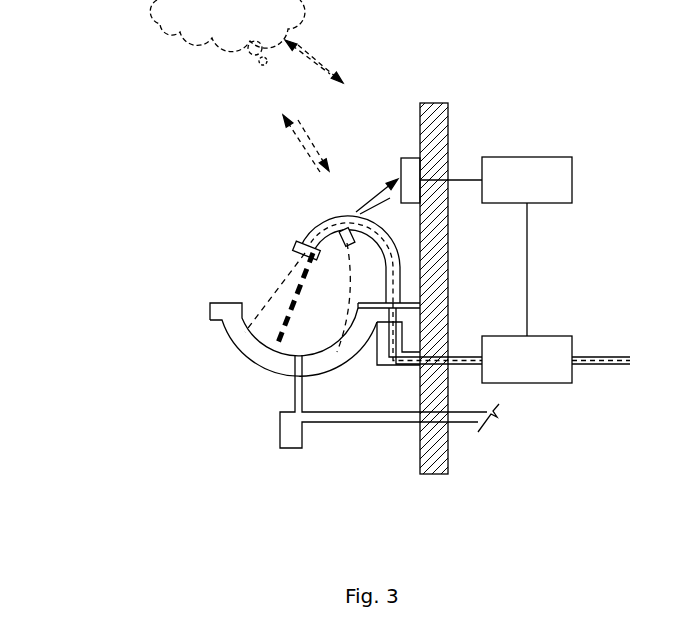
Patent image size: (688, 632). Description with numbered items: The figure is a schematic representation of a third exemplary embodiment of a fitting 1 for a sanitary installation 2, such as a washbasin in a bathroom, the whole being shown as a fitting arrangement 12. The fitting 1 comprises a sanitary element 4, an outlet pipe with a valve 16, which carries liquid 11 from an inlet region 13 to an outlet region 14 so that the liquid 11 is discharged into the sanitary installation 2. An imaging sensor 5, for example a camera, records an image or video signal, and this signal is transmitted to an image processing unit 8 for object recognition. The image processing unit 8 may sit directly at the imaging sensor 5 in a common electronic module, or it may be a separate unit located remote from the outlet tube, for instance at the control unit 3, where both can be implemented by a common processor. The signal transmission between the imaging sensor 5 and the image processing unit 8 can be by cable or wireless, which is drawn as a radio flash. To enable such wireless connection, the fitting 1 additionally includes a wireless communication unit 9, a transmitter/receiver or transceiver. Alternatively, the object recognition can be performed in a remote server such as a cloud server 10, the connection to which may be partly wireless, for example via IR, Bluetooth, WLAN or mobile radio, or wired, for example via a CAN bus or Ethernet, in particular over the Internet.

The fitting 1 is at (247, 168).
The sanitary installation 2 is at (217, 354).
The control unit 3 is at (534, 193).
The sanitary element 4 is at (296, 224).
The imaging sensor 5 is at (328, 223).
The image processing unit 8 is at (389, 154).
The communication unit 9 is at (352, 218).
The cloud server 10 is at (140, 6).
The liquid 11 is at (282, 260).
The fitting arrangement 12 is at (172, 268).
The inlet region 13 is at (272, 298).
The outlet region 14 is at (313, 356).
The valve 16 is at (543, 371).